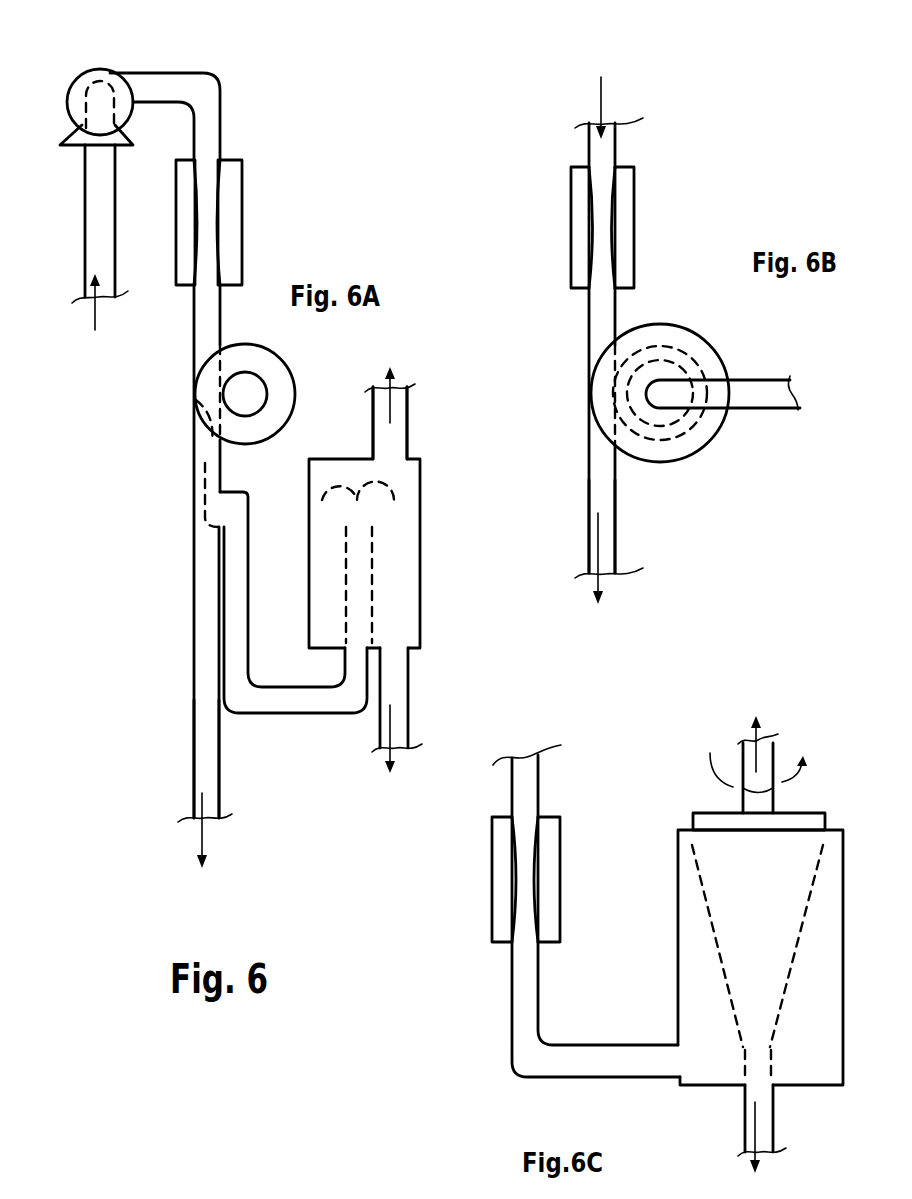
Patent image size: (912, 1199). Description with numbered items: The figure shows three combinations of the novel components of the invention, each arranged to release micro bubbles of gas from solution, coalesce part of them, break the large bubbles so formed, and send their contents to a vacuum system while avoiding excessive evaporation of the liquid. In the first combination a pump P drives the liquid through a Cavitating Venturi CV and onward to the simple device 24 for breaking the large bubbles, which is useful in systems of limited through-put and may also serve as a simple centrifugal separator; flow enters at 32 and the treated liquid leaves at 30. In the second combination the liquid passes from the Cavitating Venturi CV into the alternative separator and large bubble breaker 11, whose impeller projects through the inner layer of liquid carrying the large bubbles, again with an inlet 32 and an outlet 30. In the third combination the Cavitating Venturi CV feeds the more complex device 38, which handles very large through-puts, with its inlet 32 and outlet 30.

In FIG. 6, the pump P is at (75, 78).
In FIG. 6, the Cavitating Venturi CV is at (260, 207).
In FIG. 6B, the Cavitating Venturi CV is at (636, 227).
In FIG. 6C, the Cavitating Venturi CV is at (490, 862).
In FIG. 6B, the separator and large bubble breaker 11 is at (715, 343).
In FIG. 6A, the simple device for breaking the large bubbles 24 is at (422, 600).
In FIG. 6, the outlet 30 is at (223, 788).
In FIG. 6A, the outlet 30 is at (415, 716).
In FIG. 6B, the outlet 30 is at (618, 548).
In FIG. 6C, the outlet 30 is at (738, 1128).
In FIG. 6A, the inlet 32 is at (410, 423).
In FIG. 6B, the inlet 32 is at (760, 378).
In FIG. 6C, the inlet 32 is at (780, 757).
In FIG. 6C, the more complex device 38 is at (673, 978).